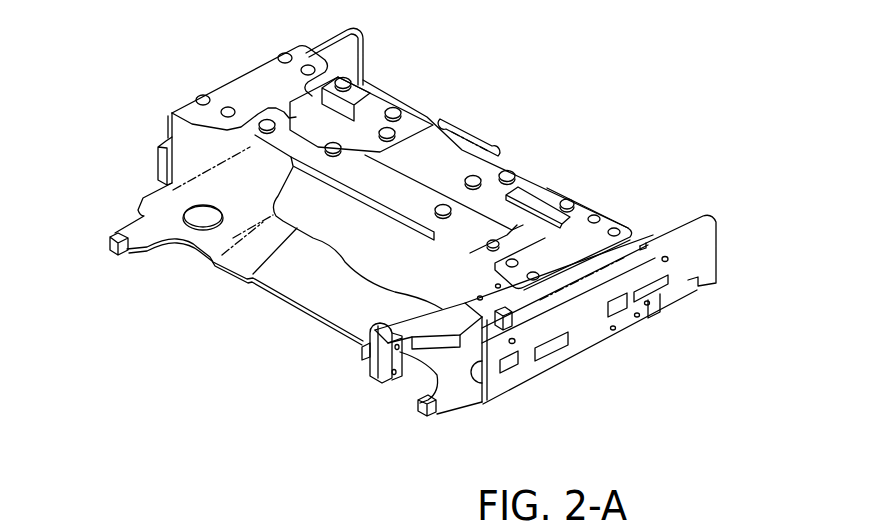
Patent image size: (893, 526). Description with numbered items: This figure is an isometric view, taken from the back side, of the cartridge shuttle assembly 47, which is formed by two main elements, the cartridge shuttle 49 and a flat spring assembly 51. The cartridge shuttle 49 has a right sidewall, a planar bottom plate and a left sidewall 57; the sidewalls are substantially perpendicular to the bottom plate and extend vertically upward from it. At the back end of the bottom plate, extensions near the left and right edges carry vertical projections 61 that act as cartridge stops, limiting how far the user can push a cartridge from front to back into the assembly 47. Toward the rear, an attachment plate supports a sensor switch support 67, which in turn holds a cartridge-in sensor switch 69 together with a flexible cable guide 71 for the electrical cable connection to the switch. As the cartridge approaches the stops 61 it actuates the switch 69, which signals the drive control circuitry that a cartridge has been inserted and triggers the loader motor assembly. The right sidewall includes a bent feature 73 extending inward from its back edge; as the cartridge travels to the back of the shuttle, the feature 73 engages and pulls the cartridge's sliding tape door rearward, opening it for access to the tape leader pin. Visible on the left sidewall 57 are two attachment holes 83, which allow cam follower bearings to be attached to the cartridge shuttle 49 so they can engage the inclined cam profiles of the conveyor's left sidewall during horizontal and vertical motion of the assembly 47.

The cartridge shuttle assembly 47 is at (486, 67).
The cartridge shuttle 49 is at (717, 253).
The flat spring assembly 51 is at (488, 137).
The left sidewall 57 is at (511, 392).
The vertical projections 61 is at (417, 407).
The sensor switch support 67 is at (518, 358).
The cartridge-in sensor switch 69 is at (368, 341).
The flexible cable guide 71 is at (365, 352).
The bent feature 73 is at (160, 160).
The attachment holes 83 is at (512, 341).